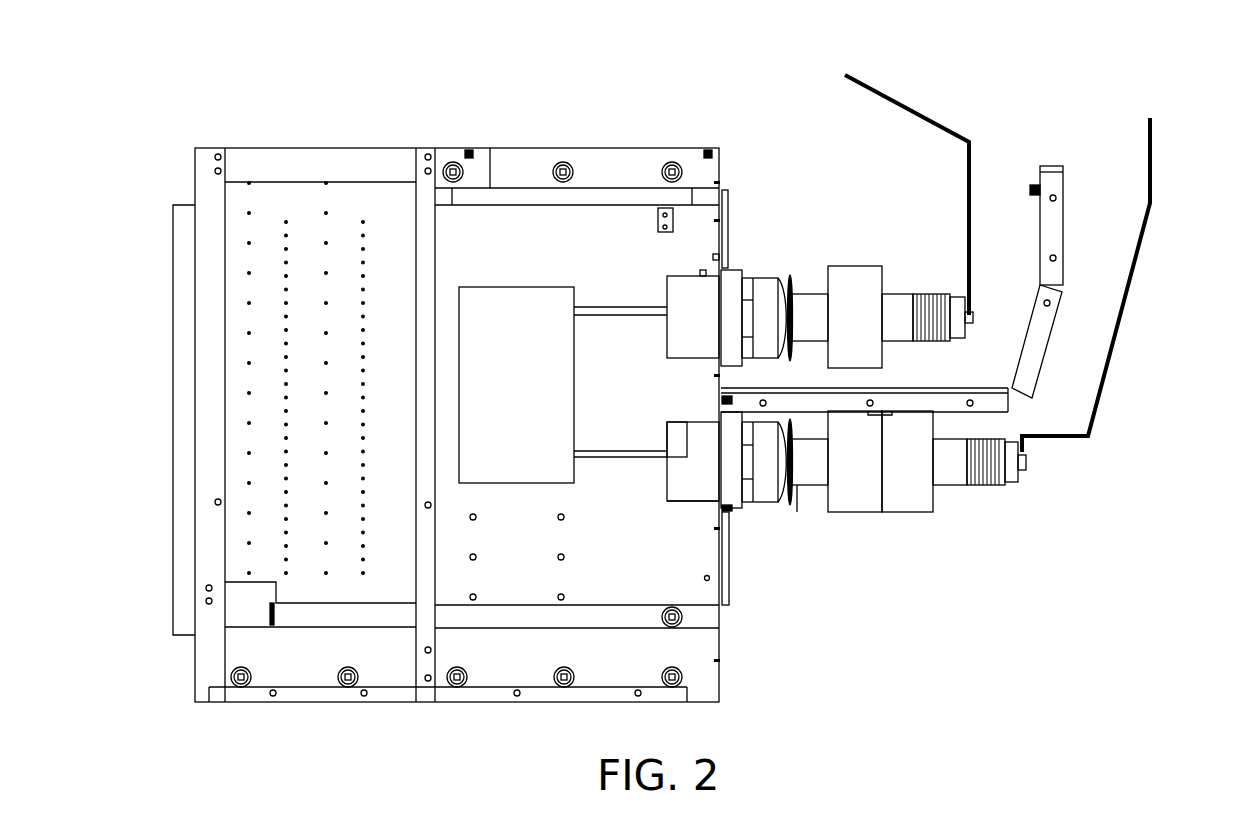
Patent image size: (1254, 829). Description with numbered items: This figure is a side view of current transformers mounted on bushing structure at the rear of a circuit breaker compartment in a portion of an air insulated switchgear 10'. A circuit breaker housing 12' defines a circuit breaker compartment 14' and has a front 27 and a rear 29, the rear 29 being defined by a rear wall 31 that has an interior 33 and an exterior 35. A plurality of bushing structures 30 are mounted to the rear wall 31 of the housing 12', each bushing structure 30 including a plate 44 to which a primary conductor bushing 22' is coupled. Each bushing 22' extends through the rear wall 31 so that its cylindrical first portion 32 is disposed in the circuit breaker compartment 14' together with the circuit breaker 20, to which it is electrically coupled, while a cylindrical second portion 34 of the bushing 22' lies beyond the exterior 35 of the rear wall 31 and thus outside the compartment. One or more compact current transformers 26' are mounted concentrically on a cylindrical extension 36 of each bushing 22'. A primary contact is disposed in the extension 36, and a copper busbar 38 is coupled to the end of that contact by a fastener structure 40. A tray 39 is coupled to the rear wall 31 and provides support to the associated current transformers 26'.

The air insulated switchgear 10' is at (779, 34).
The circuit breaker housing 12' is at (577, 141).
The circuit breaker compartment 14' is at (457, 425).
The circuit breaker 20 is at (532, 397).
The primary conductor bushing 22' is at (646, 385).
The compact current transformer 26' is at (927, 404).
The front 27 is at (195, 183).
The rear 29 is at (720, 648).
The bushing structure 30 is at (766, 262).
The rear wall 31 is at (730, 190).
The cylindrical first portion 32 is at (683, 490).
The interior 33 is at (710, 572).
The cylindrical second portion 34 is at (781, 505).
The exterior 35 is at (730, 598).
The cylindrical extension 36 is at (810, 294).
The copper busbar 38 is at (913, 105).
The tray 39 is at (797, 513).
The fastener structure 40 is at (976, 318).
The plate 44 is at (719, 257).